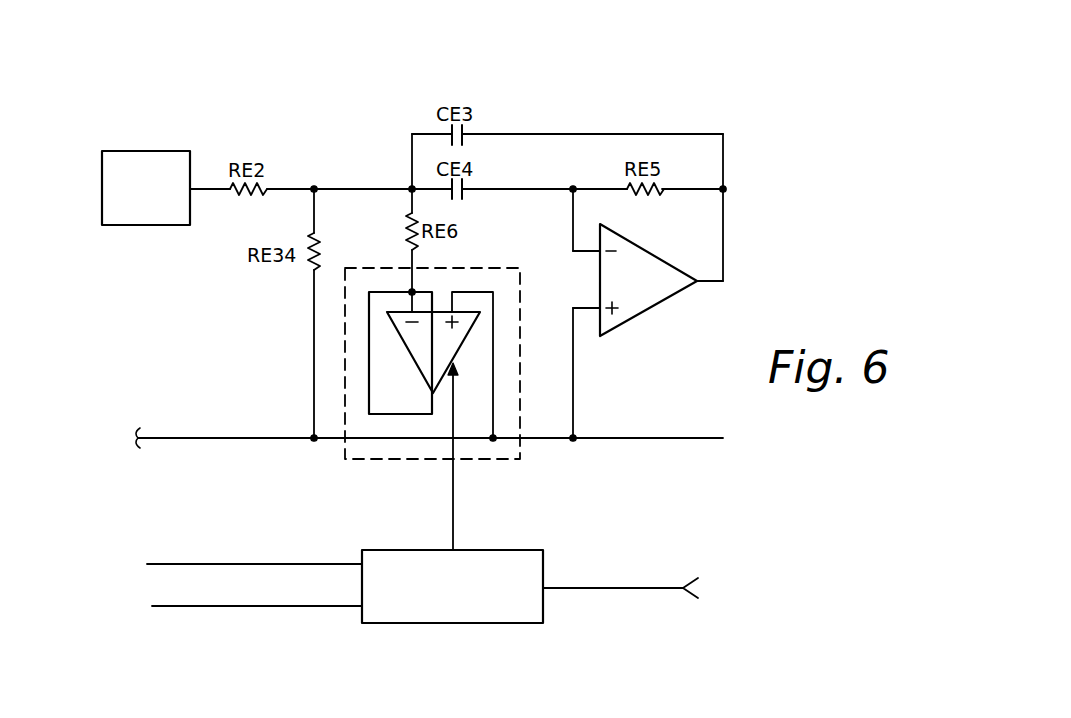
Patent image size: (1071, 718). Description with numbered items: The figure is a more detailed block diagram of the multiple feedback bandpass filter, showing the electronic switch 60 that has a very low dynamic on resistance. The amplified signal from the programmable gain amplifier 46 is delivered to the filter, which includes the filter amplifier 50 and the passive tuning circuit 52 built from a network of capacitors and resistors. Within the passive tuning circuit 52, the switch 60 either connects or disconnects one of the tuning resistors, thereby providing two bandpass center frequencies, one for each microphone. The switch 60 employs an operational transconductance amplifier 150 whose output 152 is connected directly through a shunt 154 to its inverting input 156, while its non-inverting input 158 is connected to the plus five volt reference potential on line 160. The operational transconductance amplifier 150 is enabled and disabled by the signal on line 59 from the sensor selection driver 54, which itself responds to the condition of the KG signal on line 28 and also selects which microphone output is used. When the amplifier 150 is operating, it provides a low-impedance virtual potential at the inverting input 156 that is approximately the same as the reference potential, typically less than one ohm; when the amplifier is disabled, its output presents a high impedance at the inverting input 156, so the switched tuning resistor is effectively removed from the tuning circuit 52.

The programmable gain amplifier 46 is at (192, 131).
The passive tuning circuit 52 is at (358, 127).
The filter amplifier 50 is at (662, 292).
The line 160 is at (614, 438).
The electronic switch 60 is at (345, 341).
The shunt 154 is at (385, 292).
The inverting input 156 is at (414, 296).
The operational transconductance amplifier 150 is at (412, 357).
The non-inverting input 158 is at (470, 300).
The output 152 is at (438, 395).
The line 59 is at (453, 525).
The sensor selection driver 54 is at (480, 623).
The line 28 is at (594, 588).